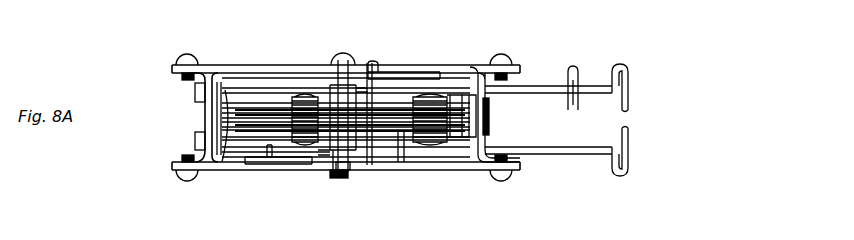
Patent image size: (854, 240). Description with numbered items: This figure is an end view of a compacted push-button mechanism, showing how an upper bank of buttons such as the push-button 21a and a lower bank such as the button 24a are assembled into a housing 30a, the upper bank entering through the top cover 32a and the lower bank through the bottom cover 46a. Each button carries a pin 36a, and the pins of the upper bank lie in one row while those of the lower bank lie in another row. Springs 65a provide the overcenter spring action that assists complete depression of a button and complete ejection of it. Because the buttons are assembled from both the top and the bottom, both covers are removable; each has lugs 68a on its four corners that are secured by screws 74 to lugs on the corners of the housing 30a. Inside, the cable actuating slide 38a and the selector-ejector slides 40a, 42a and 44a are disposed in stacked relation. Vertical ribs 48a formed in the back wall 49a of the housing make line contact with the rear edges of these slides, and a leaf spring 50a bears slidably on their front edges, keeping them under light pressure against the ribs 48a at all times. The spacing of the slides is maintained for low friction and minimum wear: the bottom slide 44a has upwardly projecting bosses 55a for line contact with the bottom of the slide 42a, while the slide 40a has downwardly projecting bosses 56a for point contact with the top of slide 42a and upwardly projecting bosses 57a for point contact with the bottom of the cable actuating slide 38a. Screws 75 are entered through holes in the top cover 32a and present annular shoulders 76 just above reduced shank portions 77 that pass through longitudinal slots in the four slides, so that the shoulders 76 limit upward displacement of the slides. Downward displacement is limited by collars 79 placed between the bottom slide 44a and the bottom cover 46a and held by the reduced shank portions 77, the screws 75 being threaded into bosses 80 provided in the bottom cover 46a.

The push-button 21a is at (630, 74).
The push-button 24a is at (630, 161).
The housing 30a is at (482, 126).
The top cover 32a is at (322, 63).
The pin 36a is at (308, 87).
The cable actuating slide 38a is at (257, 108).
The selector-ejector slide 40a is at (362, 90).
The selector-ejector slide 42a is at (344, 170).
The selector-ejector slide 44a is at (399, 150).
The bottom cover 46a is at (267, 165).
The vertical rib 48a is at (213, 108).
The back wall 49a is at (213, 116).
The leaf spring 50a is at (476, 110).
The upwardly projecting boss 55a is at (224, 142).
The downwardly projecting boss 56a is at (236, 88).
The upwardly projecting boss 57a is at (447, 105).
The spring 65a is at (428, 70).
The lug 68a is at (180, 64).
The screw 74 is at (502, 62).
The screw 75 is at (340, 88).
The annular shoulder 76 is at (352, 100).
The reduced shank portion 77 is at (340, 178).
The collar 79 is at (327, 162).
The boss 80 is at (333, 166).